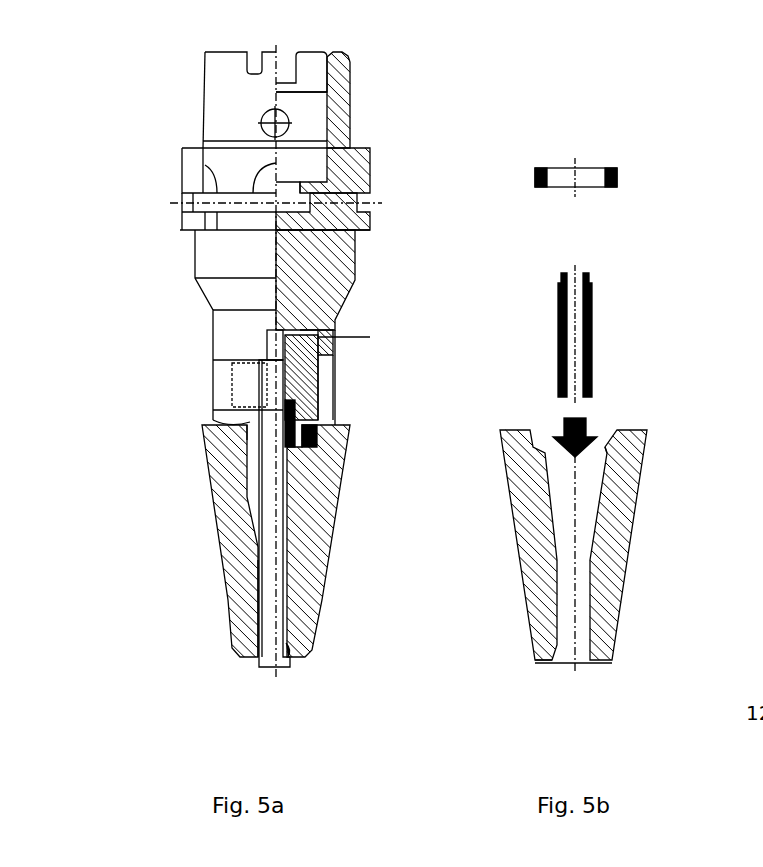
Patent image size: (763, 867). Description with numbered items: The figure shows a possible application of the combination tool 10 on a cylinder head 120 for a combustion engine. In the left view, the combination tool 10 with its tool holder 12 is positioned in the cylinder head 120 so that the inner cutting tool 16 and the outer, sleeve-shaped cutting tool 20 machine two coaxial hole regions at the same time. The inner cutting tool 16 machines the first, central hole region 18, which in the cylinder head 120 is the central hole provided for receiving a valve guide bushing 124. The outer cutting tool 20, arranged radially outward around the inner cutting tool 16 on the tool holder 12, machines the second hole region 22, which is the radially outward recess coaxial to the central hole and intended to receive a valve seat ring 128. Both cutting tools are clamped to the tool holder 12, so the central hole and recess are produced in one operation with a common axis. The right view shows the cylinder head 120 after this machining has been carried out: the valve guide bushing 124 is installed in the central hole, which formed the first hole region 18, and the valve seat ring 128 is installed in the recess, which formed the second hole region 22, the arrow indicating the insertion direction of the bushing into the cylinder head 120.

In FIG. 5A, the combination tool 10 is at (408, 141).
In FIG. 5A, the tool holder 12 is at (360, 253).
In FIG. 5A, the inner cutting tool 16 is at (293, 497).
In FIG. 5A, the first, central hole region 18 is at (292, 587).
In FIG. 5B, the first, central hole region 18 is at (565, 640).
In FIG. 5A, the outer, sleeve-shaped cutting tool 20 is at (345, 385).
In FIG. 5A, the second hole region 22 is at (247, 455).
In FIG. 5B, the second hole region 22 is at (603, 440).
In FIG. 5A, the cylinder head 120 is at (233, 578).
In FIG. 5B, the cylinder head 120 is at (608, 565).
In FIG. 5B, the valve guide bushing 124 is at (593, 333).
In FIG. 5B, the valve seat ring 128 is at (617, 170).